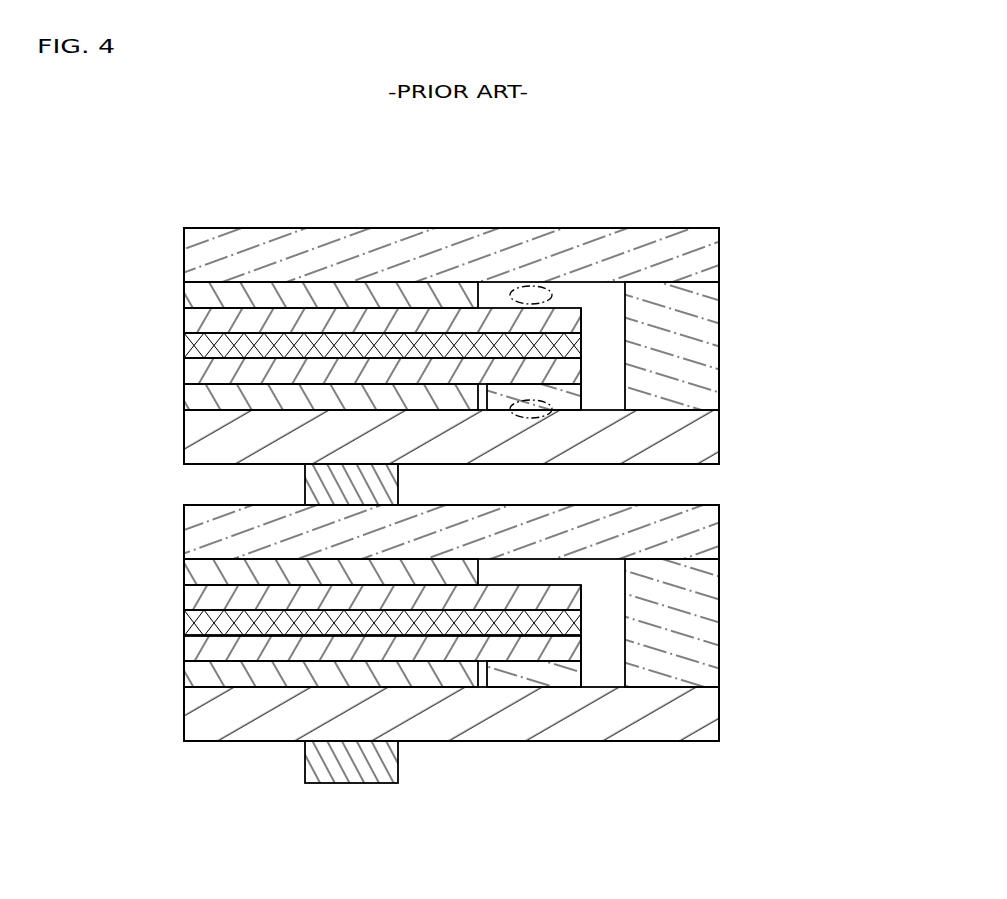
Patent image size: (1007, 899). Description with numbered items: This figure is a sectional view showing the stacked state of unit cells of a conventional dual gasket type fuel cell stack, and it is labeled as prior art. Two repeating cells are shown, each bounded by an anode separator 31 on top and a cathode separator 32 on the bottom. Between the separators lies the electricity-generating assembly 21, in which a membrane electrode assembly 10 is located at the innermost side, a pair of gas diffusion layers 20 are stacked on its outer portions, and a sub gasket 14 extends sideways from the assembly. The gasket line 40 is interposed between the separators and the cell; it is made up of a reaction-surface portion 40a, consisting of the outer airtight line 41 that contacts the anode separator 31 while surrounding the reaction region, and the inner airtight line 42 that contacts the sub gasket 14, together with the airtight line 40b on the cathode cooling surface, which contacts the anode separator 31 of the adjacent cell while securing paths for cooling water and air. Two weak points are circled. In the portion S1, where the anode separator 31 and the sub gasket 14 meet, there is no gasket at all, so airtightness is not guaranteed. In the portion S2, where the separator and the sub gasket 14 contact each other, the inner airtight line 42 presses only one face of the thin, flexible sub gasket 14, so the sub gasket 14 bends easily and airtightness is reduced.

The membrane electrode assembly 10 is at (203, 347).
The sub gasket 14 is at (203, 323).
The gas diffusion layer 20 is at (203, 298).
The electricity-generating assembly 21 is at (95, 290).
The anode separator 31 is at (203, 260).
The cathode separator 32 is at (203, 440).
The gasket line 40 is at (486, 559).
The side sealing portion 40a is at (805, 348).
The airtight line 40b is at (317, 487).
The outer airtight line 41 is at (700, 352).
The inner airtight line 42 is at (555, 397).
The portion S1 is at (552, 297).
The portion S2 is at (532, 398).